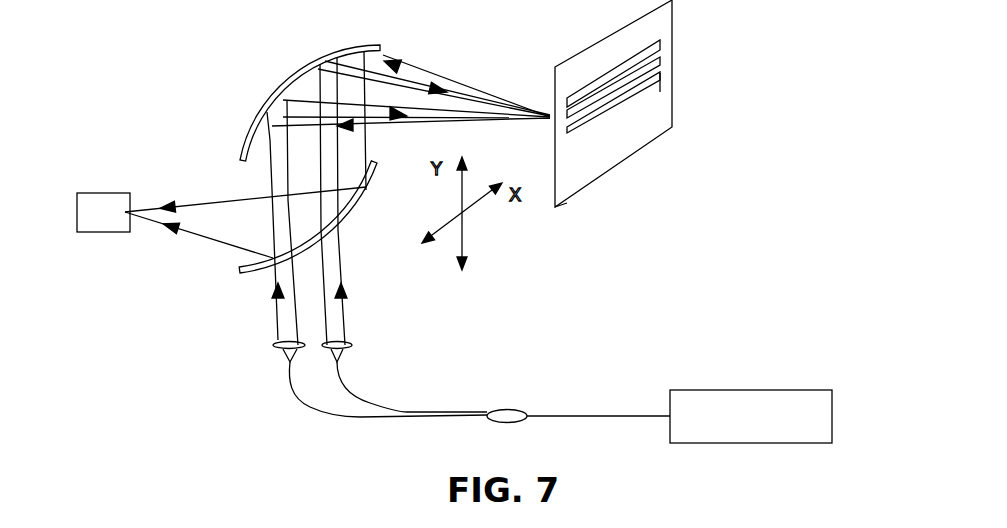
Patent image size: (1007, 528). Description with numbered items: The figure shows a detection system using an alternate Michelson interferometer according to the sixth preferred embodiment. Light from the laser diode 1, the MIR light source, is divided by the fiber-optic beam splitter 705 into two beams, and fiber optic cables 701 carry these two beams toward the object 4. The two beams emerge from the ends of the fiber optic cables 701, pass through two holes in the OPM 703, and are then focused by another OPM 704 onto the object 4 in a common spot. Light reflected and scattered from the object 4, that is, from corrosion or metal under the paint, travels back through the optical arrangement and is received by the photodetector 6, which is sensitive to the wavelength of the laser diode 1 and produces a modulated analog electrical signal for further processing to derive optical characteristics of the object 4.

The laser diode 1 is at (751, 416).
The object 4 is at (613, 103).
The photodetector 6 is at (221, 222).
The fiber optic cables 701 is at (360, 417).
The OPM 703 is at (358, 221).
The OPM 704 is at (268, 102).
The fiber-optic beam splitter 705 is at (510, 412).